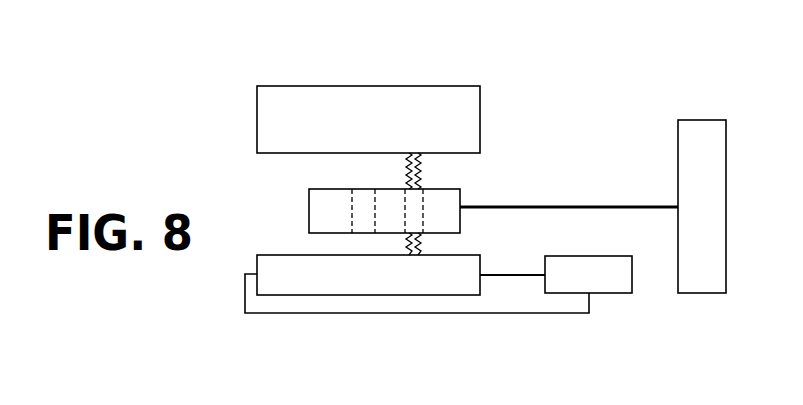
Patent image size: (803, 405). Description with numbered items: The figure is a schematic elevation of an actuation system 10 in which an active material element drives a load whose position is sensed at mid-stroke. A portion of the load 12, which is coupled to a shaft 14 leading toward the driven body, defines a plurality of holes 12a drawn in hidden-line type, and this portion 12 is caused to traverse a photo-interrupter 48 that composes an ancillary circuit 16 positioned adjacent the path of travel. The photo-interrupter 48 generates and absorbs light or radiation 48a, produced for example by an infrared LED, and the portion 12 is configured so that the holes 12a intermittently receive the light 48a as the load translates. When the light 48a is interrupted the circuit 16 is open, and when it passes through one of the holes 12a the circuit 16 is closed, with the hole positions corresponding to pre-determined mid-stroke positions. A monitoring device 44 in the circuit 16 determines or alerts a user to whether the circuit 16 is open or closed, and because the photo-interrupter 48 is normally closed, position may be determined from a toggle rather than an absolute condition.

The actuation system 10 is at (278, 57).
The photo-interrupter 48 is at (388, 136).
The light or radiation 48a is at (422, 182).
The portion of the load 12 is at (462, 190).
The holes 12a is at (363, 188).
The shaft 14 is at (632, 206).
The ancillary circuit 16 is at (417, 313).
The monitoring device 44 is at (623, 293).